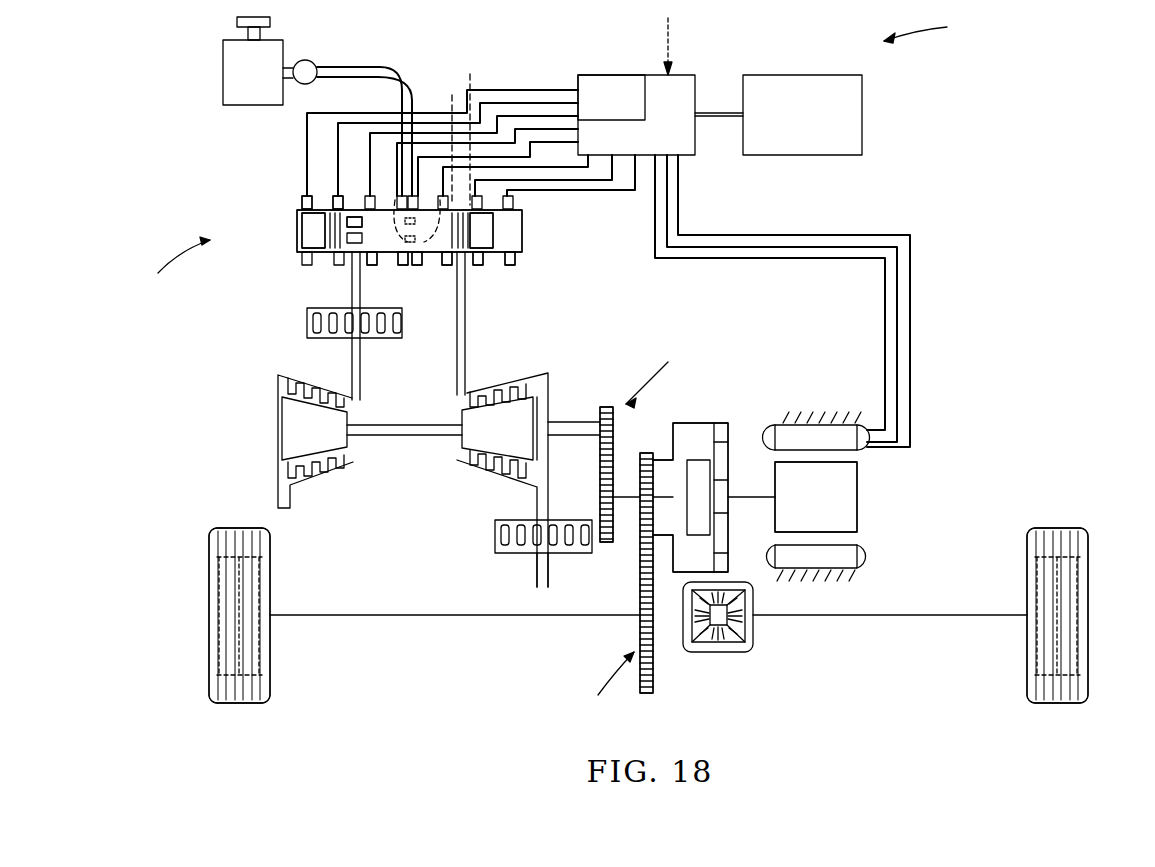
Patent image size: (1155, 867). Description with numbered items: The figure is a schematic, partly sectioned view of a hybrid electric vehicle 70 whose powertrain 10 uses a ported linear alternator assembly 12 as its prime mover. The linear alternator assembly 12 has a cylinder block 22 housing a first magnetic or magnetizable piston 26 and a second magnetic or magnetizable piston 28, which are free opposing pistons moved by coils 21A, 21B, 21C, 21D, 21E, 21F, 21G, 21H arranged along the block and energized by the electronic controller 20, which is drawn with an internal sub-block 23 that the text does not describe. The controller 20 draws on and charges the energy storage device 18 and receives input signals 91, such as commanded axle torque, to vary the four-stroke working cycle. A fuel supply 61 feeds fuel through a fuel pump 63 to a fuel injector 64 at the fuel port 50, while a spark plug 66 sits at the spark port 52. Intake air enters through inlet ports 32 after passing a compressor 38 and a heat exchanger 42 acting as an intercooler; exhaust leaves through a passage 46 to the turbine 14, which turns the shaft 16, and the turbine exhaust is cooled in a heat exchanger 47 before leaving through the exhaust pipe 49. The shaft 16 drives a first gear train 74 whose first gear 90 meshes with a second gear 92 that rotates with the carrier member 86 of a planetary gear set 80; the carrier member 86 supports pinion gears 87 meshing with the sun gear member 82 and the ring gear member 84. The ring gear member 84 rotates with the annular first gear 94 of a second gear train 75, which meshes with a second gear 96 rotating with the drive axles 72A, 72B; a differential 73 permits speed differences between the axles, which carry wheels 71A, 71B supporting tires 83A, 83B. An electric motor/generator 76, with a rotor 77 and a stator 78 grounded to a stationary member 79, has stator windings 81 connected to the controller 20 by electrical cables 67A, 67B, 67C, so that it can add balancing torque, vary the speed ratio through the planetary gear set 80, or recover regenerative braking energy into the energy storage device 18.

The fuel supply 61 is at (242, 82).
The fuel pump 63 is at (311, 60).
The fuel port 50 is at (390, 200).
The spark port 52 is at (396, 230).
The electronic controller 20 is at (655, 146).
The processor 23 is at (597, 106).
The energy storage device 18 is at (790, 121).
The input signals 91 is at (668, 50).
The vehicle 70 is at (930, 28).
The fuel injector 64 is at (437, 141).
The spark plug 66 is at (457, 126).
The linear alternator assembly 12 is at (268, 242).
The powertrain 10 is at (179, 268).
The coil 21A is at (304, 196).
The coil 21B is at (338, 196).
The coil 21C is at (372, 265).
The coil 21D is at (403, 265).
The coil 21E is at (418, 265).
The coil 21F is at (447, 265).
The coil 21G is at (480, 265).
The coil 21H is at (512, 265).
The inlet ports 32 is at (347, 222).
The first magnetic or magnetizable piston 26 is at (313, 240).
The cylinder block 22 is at (522, 238).
The second magnetic or magnetizable piston 28 is at (495, 232).
The passage 46 is at (466, 362).
The heat exchanger 42 is at (307, 325).
The heat exchanger 47 is at (495, 535).
The compressor 38 is at (276, 472).
The turbine 14 is at (545, 385).
The exhaust pipe 49 is at (535, 575).
The shaft 16 is at (572, 420).
The first gear 90 is at (608, 406).
The first gear train 74 is at (652, 373).
The second gear 92 is at (600, 470).
The first gear 94 is at (648, 452).
The second gear 96 is at (640, 582).
The second gear train 75 is at (606, 683).
The sun gear member 82 is at (730, 497).
The planetary gear set 80 is at (727, 395).
The ring gear member 84 is at (728, 425).
The pinion gears 87 is at (726, 460).
The carrier member 86 is at (700, 470).
The stationary member 79 is at (836, 411).
The stator 78 is at (869, 452).
The stator windings 81 is at (871, 455).
The rotor 77 is at (806, 505).
The electric motor/generator 76 is at (880, 498).
The electrical cable 67A is at (720, 235).
The electrical cable 67B is at (785, 247).
The electrical cable 67C is at (848, 258).
The drive axle 72A is at (452, 615).
The drive axle 72B is at (875, 617).
The differential 73 is at (727, 660).
The tire 83A is at (272, 663).
The tire 83B is at (1027, 663).
The wheel 71A is at (213, 602).
The wheel 71B is at (1090, 602).